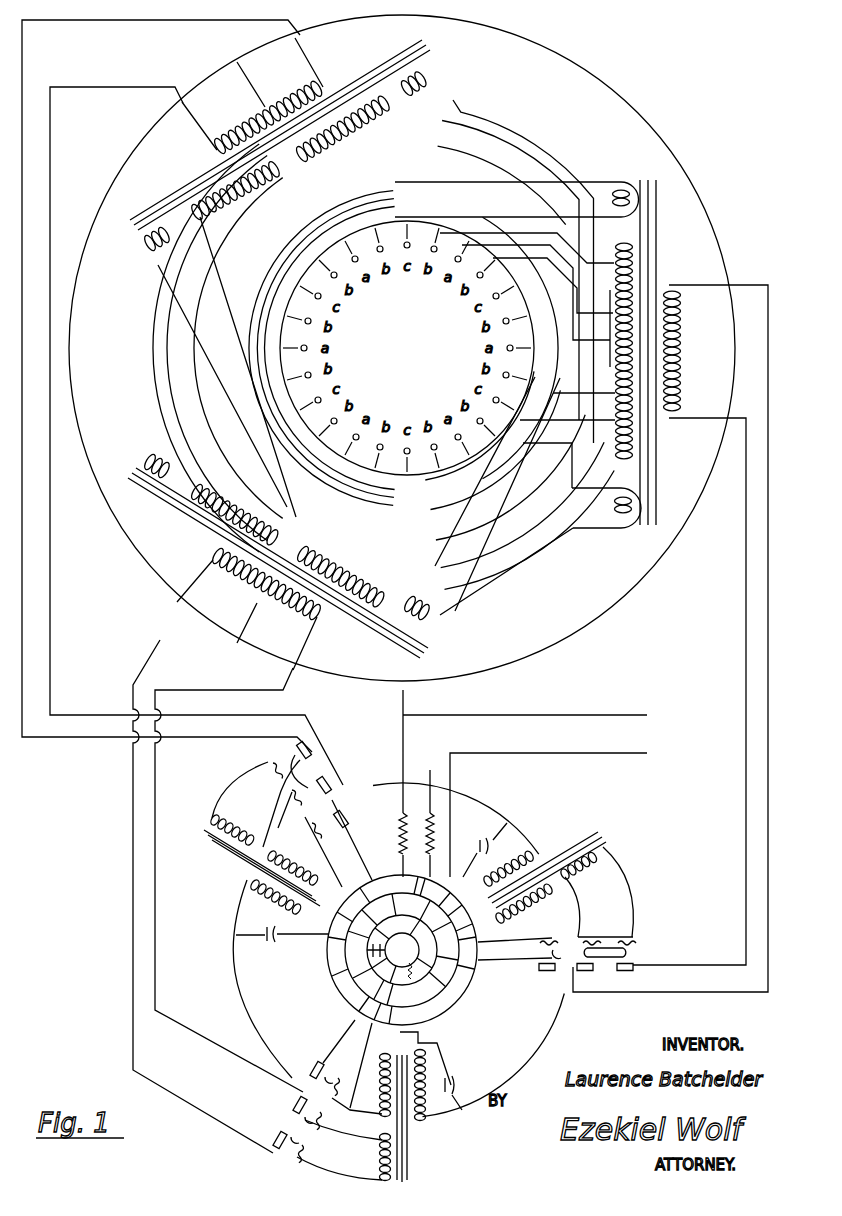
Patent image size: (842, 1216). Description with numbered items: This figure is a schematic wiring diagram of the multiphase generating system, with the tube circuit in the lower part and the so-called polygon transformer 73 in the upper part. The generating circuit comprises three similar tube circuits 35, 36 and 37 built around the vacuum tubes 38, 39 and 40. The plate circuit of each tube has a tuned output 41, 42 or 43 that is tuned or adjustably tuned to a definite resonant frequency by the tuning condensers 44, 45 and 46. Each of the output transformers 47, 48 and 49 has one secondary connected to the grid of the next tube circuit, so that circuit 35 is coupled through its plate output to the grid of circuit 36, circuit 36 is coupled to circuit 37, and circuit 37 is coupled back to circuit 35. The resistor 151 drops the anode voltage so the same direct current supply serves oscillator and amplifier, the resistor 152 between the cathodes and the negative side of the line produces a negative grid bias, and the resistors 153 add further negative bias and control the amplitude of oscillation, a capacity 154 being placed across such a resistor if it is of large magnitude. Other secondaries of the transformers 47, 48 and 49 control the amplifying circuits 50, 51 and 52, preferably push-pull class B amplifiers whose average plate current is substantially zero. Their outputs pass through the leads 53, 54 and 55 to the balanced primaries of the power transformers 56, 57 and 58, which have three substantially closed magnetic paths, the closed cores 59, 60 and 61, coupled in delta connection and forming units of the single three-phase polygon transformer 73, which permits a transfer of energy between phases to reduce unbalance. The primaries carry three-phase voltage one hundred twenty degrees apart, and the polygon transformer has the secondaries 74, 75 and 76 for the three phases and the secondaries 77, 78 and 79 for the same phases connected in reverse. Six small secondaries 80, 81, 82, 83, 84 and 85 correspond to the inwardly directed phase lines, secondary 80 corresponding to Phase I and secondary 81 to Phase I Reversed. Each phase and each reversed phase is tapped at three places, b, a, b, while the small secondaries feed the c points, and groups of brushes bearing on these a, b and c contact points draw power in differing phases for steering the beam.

The tube circuit 35 is at (511, 783).
The tube circuit 36 is at (482, 1055).
The tube circuit 37 is at (379, 950).
The vacuum tube 38 is at (347, 805).
The vacuum tube 39 is at (560, 972).
The vacuum tube 40 is at (305, 1072).
The tuned output 41 is at (510, 847).
The tuned output 42 is at (443, 1103).
The tuned output 43 is at (255, 906).
The tuning condenser 44 is at (482, 838).
The tuning condenser 45 is at (460, 1073).
The tuning condenser 46 is at (247, 960).
The output transformer 47 is at (553, 857).
The output transformer 48 is at (407, 1123).
The output transformer 49 is at (245, 868).
The amplifying circuit 50 is at (613, 892).
The amplifying circuit 51 is at (337, 1158).
The amplifying circuit 52 is at (333, 730).
The lead 53 is at (759, 744).
The lead 54 is at (203, 896).
The lead 55 is at (182, 402).
The power transformer 56 is at (678, 263).
The power transformer 57 is at (250, 608).
The power transformer 58 is at (253, 96).
The closed core 59 is at (663, 202).
The closed core 60 is at (388, 647).
The closed core 61 is at (197, 182).
The polygon transformer 73 is at (546, 89).
The secondary 74 is at (633, 253).
The secondary 75 is at (372, 577).
The secondary 76 is at (197, 203).
The secondary 77 is at (633, 450).
The secondary 78 is at (210, 523).
The secondary 79 is at (373, 100).
The small secondary 80 is at (626, 178).
The small secondary 81 is at (631, 522).
The small secondary 82 is at (438, 630).
The small secondary 83 is at (143, 465).
The small secondary 84 is at (143, 248).
The small secondary 85 is at (438, 72).
The resistor 151 is at (405, 807).
The resistor 152 is at (440, 760).
The resistor 153 is at (420, 973).
The capacity 154 is at (367, 973).